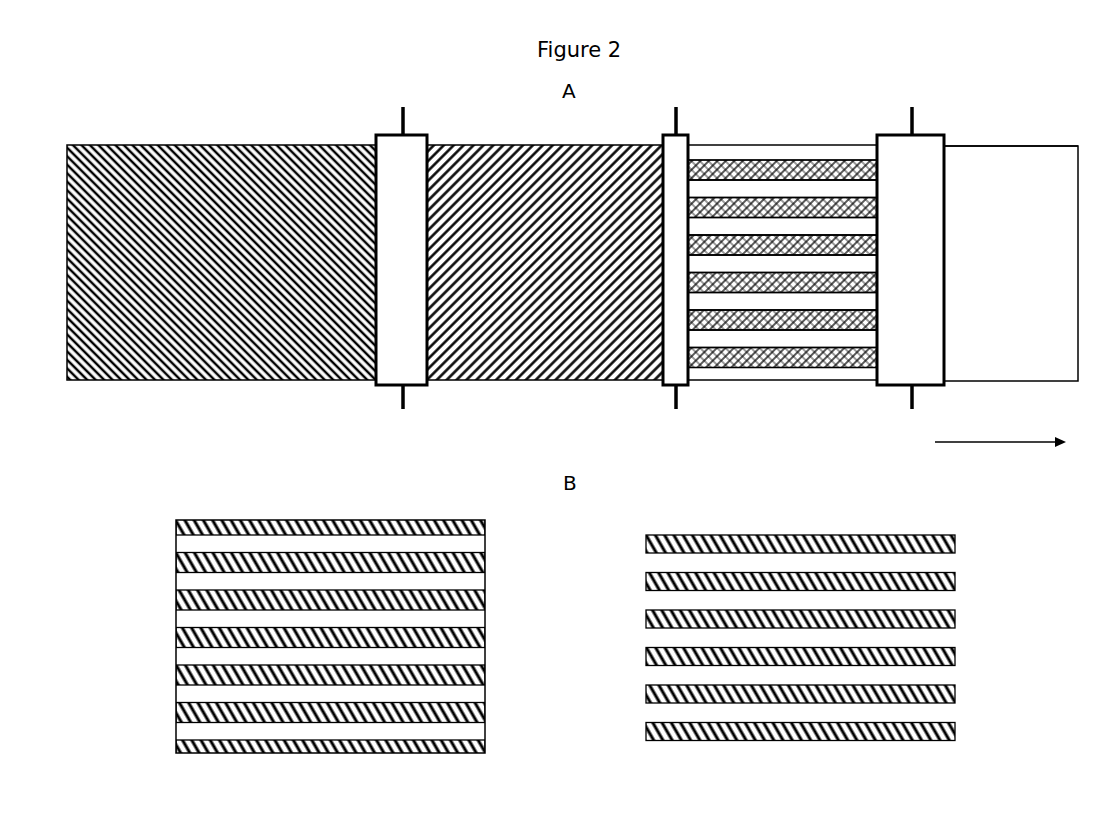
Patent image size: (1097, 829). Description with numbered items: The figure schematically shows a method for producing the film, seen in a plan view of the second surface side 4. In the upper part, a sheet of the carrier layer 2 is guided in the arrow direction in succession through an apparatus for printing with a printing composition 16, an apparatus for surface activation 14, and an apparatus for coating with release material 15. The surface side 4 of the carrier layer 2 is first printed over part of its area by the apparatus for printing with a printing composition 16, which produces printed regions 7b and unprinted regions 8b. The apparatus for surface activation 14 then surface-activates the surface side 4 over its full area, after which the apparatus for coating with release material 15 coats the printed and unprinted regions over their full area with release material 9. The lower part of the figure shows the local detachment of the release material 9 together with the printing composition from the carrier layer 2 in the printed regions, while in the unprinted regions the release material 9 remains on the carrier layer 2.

The apparatus for coating with release material 15 is at (435, 145).
The apparatus for surface activation 14 is at (677, 152).
The apparatus for printing with a printing composition 16 is at (905, 182).
The carrier layer 2 is at (1010, 145).
The second surface side 4 is at (1048, 153).
The printed regions 7b is at (760, 358).
The unprinted regions 8b is at (832, 300).
The release material 9 is at (875, 542).